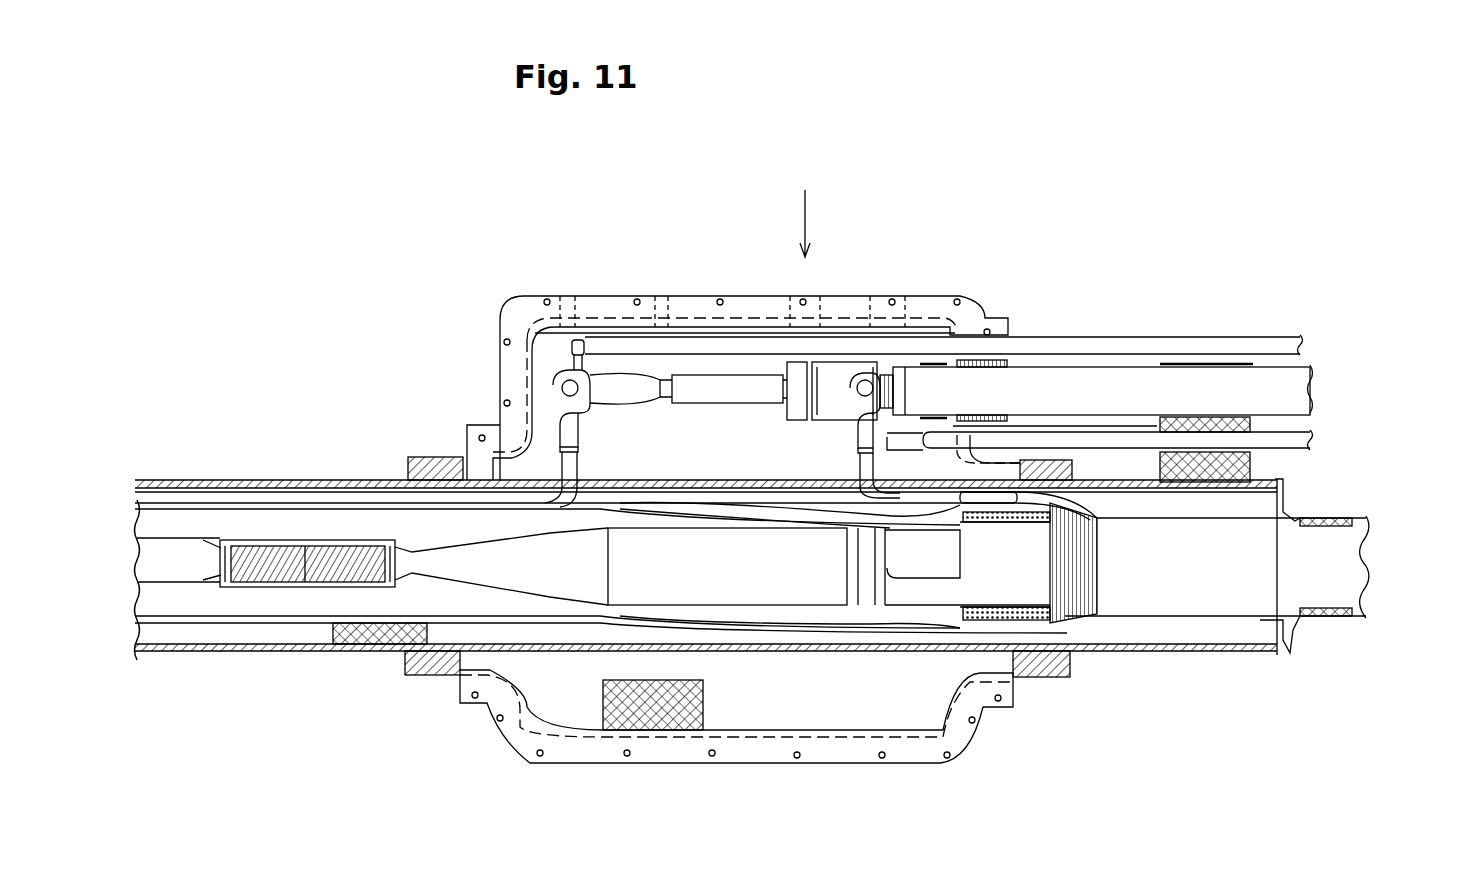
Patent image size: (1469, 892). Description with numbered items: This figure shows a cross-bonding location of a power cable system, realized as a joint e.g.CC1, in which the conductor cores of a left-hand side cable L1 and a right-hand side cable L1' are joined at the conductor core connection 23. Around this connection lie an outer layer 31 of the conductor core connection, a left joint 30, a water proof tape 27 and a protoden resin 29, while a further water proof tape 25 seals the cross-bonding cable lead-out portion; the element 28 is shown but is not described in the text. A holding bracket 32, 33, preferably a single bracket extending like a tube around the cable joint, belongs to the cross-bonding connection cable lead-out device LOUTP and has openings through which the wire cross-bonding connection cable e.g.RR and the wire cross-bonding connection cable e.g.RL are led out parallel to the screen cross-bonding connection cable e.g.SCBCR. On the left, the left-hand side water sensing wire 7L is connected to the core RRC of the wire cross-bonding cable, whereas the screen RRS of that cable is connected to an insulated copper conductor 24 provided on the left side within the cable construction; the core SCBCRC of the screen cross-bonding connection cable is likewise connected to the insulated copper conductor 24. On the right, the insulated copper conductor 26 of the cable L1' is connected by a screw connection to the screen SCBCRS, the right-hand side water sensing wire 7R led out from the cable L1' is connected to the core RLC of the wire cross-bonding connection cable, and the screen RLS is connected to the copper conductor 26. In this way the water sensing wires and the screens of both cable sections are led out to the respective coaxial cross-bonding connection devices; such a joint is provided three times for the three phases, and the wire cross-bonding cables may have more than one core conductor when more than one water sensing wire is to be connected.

The left-hand side cable L1 is at (706, 534).
The conductor core connection 23 is at (280, 557).
The outer layer of the conductor core connection 31 is at (237, 590).
The left joint 30 is at (287, 600).
The right-hand side water sensing wire 7R is at (973, 577).
The right-hand side cable L1' is at (1217, 567).
The water proof tape 27 is at (1270, 632).
The protoden resin 29 is at (367, 643).
The spacer block 28 is at (1080, 583).
The holding bracket 33 is at (813, 747).
The holding bracket 32 is at (527, 298).
The screen of the wire cross-bonding cable RR RRS is at (643, 355).
The wire cross-bonding cable e.g.RR is at (1287, 343).
The screen cross-bonding connection cable e.g.SCBCR is at (1103, 380).
The wire cross-bonding connection cable e.g.RL is at (1305, 443).
The insulated copper conductor 26 is at (905, 510).
The core of the wire cross-bonding cable RR RRC is at (578, 340).
The left-hand side water sensing wire 7L is at (543, 366).
The insulated copper conductor 24 is at (485, 497).
The core of the screen cross-bonding connection cable SCBCRC is at (687, 390).
The water proof tape 25 is at (763, 368).
The screen of the screen cross-bonding connection cable SCBCRS is at (857, 440).
The core of the wire cross-bonding connection cable RL RLC is at (912, 368).
The screen of the wire cross-bonding connection cable RL RLS is at (893, 502).
The cross-bonding connection cable lead-out device LOUTP is at (802, 209).
The joint e.g.CC1 is at (1065, 141).